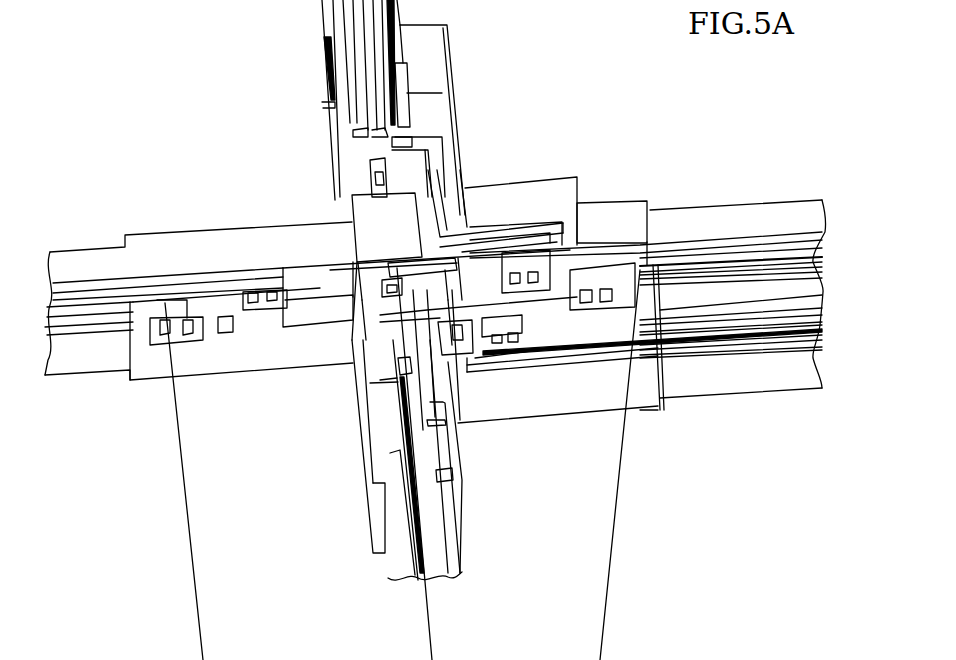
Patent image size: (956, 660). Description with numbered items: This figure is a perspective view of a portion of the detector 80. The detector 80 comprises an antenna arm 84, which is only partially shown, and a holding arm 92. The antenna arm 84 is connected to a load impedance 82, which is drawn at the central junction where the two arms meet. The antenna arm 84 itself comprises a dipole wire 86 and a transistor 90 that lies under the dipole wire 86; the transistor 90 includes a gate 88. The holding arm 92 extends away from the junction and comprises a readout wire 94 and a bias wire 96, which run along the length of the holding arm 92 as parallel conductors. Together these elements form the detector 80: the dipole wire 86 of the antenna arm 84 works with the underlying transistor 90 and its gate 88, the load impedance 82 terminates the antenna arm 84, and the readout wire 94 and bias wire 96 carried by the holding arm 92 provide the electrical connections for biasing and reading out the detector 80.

The detector 80 is at (315, 422).
The load impedance 82 is at (372, 222).
The antenna arm 84 is at (686, 232).
The dipole wire 86 is at (606, 262).
The gate 88 is at (749, 262).
The transistor 90 is at (795, 280).
The bias wire 96 is at (812, 318).
The readout wire 94 is at (813, 343).
The holding arm 92 is at (777, 377).